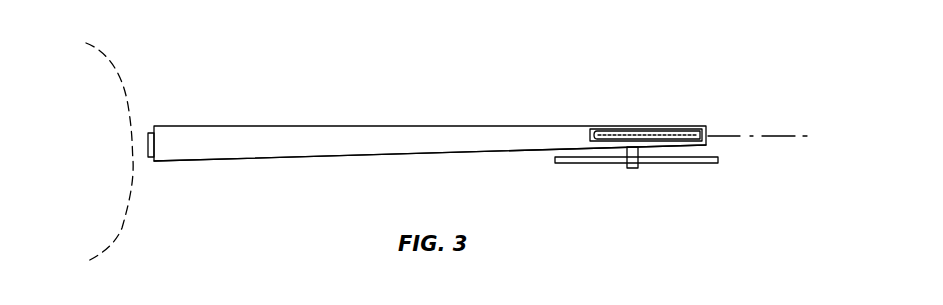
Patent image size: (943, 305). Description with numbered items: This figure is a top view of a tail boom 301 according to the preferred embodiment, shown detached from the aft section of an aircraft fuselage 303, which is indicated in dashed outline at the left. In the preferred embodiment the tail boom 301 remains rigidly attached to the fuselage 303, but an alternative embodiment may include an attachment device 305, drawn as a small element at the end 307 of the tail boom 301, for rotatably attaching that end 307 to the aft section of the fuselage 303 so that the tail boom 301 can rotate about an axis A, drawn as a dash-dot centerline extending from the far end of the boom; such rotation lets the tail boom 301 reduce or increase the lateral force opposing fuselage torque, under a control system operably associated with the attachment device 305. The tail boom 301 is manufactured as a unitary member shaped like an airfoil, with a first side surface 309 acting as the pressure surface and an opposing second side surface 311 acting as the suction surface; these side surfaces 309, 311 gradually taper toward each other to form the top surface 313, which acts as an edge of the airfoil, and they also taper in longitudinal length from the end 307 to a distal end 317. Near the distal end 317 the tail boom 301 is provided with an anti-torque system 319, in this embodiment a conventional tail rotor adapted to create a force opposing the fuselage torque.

The tail boom 301 is at (233, 72).
The aircraft fuselage 303 is at (122, 228).
The attachment device 305 is at (155, 133).
The end 307 is at (133, 160).
The first side surface 309 is at (353, 163).
The second side surface 311 is at (383, 118).
The top surface 313 is at (195, 144).
The distal end 317 is at (706, 125).
The anti-torque system 319 is at (720, 183).
The axis A is at (732, 136).